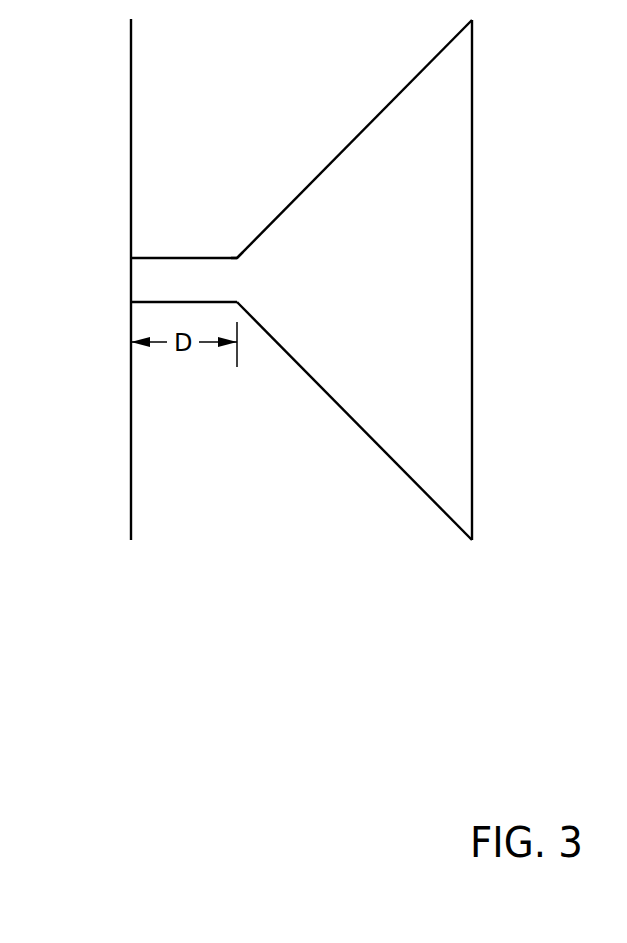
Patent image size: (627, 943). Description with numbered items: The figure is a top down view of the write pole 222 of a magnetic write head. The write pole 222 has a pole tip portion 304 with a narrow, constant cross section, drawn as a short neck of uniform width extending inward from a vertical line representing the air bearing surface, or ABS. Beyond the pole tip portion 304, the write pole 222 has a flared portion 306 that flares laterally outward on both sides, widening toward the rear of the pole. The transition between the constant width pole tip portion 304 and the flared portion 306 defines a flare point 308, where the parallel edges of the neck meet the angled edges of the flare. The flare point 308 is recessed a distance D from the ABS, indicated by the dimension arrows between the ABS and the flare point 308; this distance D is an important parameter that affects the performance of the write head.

The write pole 222 is at (473, 217).
The pole tip portion 304 is at (200, 257).
The flared portion 306 is at (390, 102).
The flare point 308 is at (237, 255).
The air bearing surface ABS is at (131, 118).